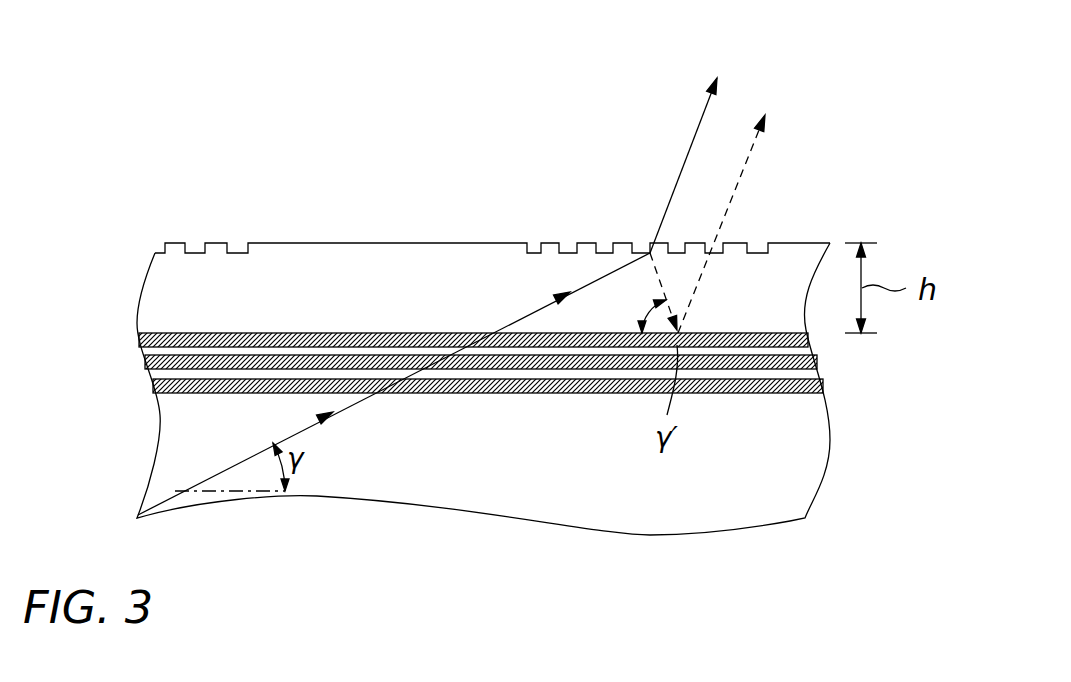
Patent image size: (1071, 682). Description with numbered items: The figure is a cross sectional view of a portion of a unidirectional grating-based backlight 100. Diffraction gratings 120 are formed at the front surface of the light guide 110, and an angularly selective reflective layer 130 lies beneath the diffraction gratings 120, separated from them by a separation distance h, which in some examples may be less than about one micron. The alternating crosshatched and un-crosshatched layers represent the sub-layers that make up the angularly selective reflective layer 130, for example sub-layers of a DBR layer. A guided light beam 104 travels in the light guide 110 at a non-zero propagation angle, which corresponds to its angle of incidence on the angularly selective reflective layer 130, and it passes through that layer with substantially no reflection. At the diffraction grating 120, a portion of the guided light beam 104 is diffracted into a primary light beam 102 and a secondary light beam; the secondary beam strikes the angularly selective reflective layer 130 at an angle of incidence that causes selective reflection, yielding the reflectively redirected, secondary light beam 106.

The unidirectional grating-based backlight 100 is at (808, 57).
The primary light beam 102 is at (658, 185).
The guided light beam 104 is at (333, 425).
The reflectively redirected, secondary light beam 106 is at (755, 183).
The light guide 110 is at (820, 448).
The diffraction gratings 120 is at (193, 232).
The angularly selective reflective layer 130 is at (127, 333).